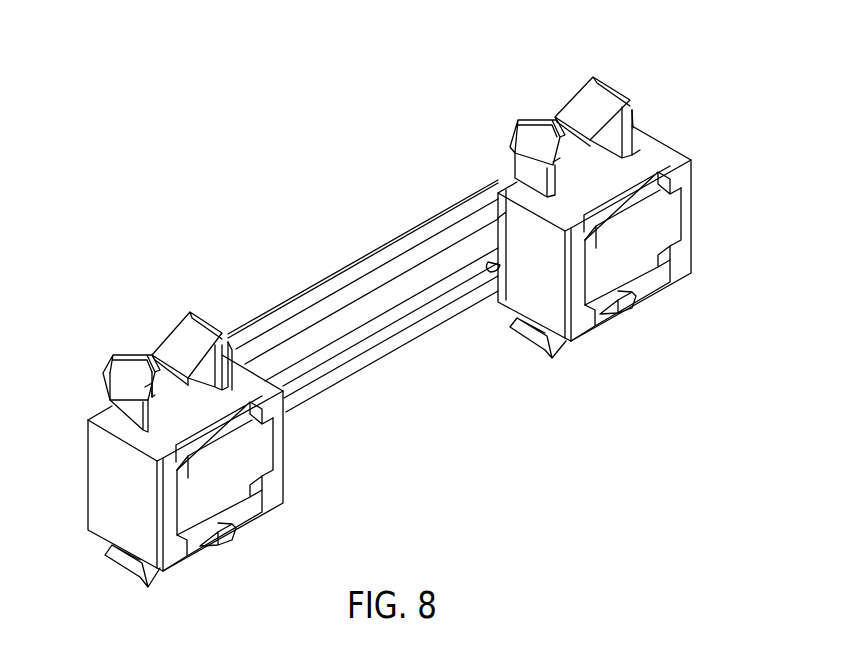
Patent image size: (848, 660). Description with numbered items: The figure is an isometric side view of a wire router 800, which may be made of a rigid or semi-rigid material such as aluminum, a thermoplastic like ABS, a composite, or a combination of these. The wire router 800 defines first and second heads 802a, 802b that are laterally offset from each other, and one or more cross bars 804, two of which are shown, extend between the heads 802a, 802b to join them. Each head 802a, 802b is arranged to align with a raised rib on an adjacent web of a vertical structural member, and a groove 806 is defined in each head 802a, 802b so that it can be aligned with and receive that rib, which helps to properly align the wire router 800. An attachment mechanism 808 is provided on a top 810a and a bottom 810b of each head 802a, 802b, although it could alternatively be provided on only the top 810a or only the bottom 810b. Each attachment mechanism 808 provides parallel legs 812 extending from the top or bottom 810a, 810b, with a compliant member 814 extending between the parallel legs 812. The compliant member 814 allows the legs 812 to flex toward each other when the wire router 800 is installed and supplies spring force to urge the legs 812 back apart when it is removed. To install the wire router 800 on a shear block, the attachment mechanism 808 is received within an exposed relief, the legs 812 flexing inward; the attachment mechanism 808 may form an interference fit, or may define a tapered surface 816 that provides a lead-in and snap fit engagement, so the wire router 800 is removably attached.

The wire router 800 is at (160, 107).
The first head 802a is at (76, 471).
The second head 802b is at (703, 138).
The cross bar 804 is at (378, 332).
The groove 806 is at (223, 427).
The attachment mechanism 808 is at (232, 546).
The top of head 810a is at (253, 387).
The bottom of head 810b is at (273, 507).
The parallel legs 812 is at (113, 402).
The compliant member 814 is at (173, 337).
The tapered surface 816 is at (112, 548).